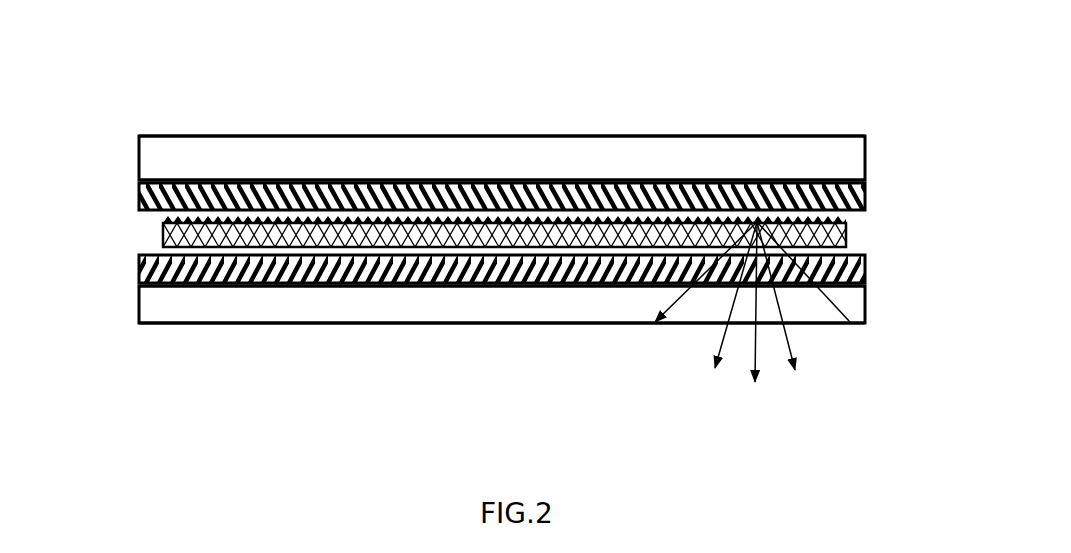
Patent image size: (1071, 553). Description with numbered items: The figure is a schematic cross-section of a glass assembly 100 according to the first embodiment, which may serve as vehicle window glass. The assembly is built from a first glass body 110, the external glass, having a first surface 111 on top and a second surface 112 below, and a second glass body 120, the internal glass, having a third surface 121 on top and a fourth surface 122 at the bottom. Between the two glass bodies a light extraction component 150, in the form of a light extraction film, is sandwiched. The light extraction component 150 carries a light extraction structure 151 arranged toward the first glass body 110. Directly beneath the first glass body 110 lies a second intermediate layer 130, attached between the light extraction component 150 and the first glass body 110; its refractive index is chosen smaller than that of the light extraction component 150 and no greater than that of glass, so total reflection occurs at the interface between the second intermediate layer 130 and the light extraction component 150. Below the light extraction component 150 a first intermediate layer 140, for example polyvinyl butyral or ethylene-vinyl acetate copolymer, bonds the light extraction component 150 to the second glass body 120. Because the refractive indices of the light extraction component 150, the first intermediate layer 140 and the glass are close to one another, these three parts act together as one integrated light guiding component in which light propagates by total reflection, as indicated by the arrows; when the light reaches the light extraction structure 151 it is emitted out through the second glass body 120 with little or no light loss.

The glass assembly 100 is at (541, 42).
The first glass body 110 is at (728, 160).
The first surface 111 is at (395, 137).
The second surface 112 is at (567, 177).
The second glass body 120 is at (233, 313).
The third surface 121 is at (437, 287).
The fourth surface 122 is at (567, 325).
The second intermediate layer 130 is at (150, 197).
The first intermediate layer 140 is at (150, 272).
The light extraction component 150 is at (846, 235).
The light extraction structure 151 is at (842, 220).